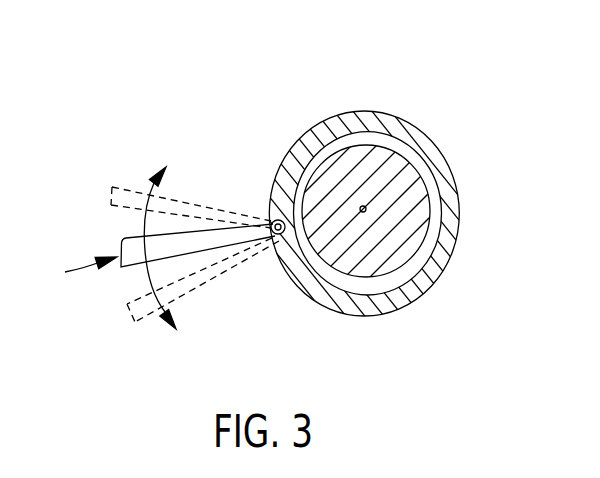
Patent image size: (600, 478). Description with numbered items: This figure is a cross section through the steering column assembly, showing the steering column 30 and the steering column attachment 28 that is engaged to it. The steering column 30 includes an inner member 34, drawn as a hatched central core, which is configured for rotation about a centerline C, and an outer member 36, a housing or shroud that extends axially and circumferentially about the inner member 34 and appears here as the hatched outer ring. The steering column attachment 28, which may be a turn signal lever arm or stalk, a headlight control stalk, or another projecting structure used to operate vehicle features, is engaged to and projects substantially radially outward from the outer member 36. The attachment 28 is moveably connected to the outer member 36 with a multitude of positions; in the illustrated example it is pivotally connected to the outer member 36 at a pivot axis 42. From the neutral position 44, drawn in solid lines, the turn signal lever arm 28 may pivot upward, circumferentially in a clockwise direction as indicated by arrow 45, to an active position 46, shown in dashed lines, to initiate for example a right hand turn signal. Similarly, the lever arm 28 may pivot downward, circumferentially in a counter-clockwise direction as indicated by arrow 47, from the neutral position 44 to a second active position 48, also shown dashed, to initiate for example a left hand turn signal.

The steering column 30 is at (348, 88).
The outer member 36 is at (380, 114).
The inner member 34 is at (398, 162).
The centerline C is at (364, 208).
The pivot axis 42 is at (276, 220).
The neutral position 44 is at (121, 239).
The steering column attachment 28 is at (80, 272).
The arrow 45 is at (156, 192).
The arrow 47 is at (165, 298).
The active position 46 is at (112, 187).
The second active position 48 is at (134, 323).